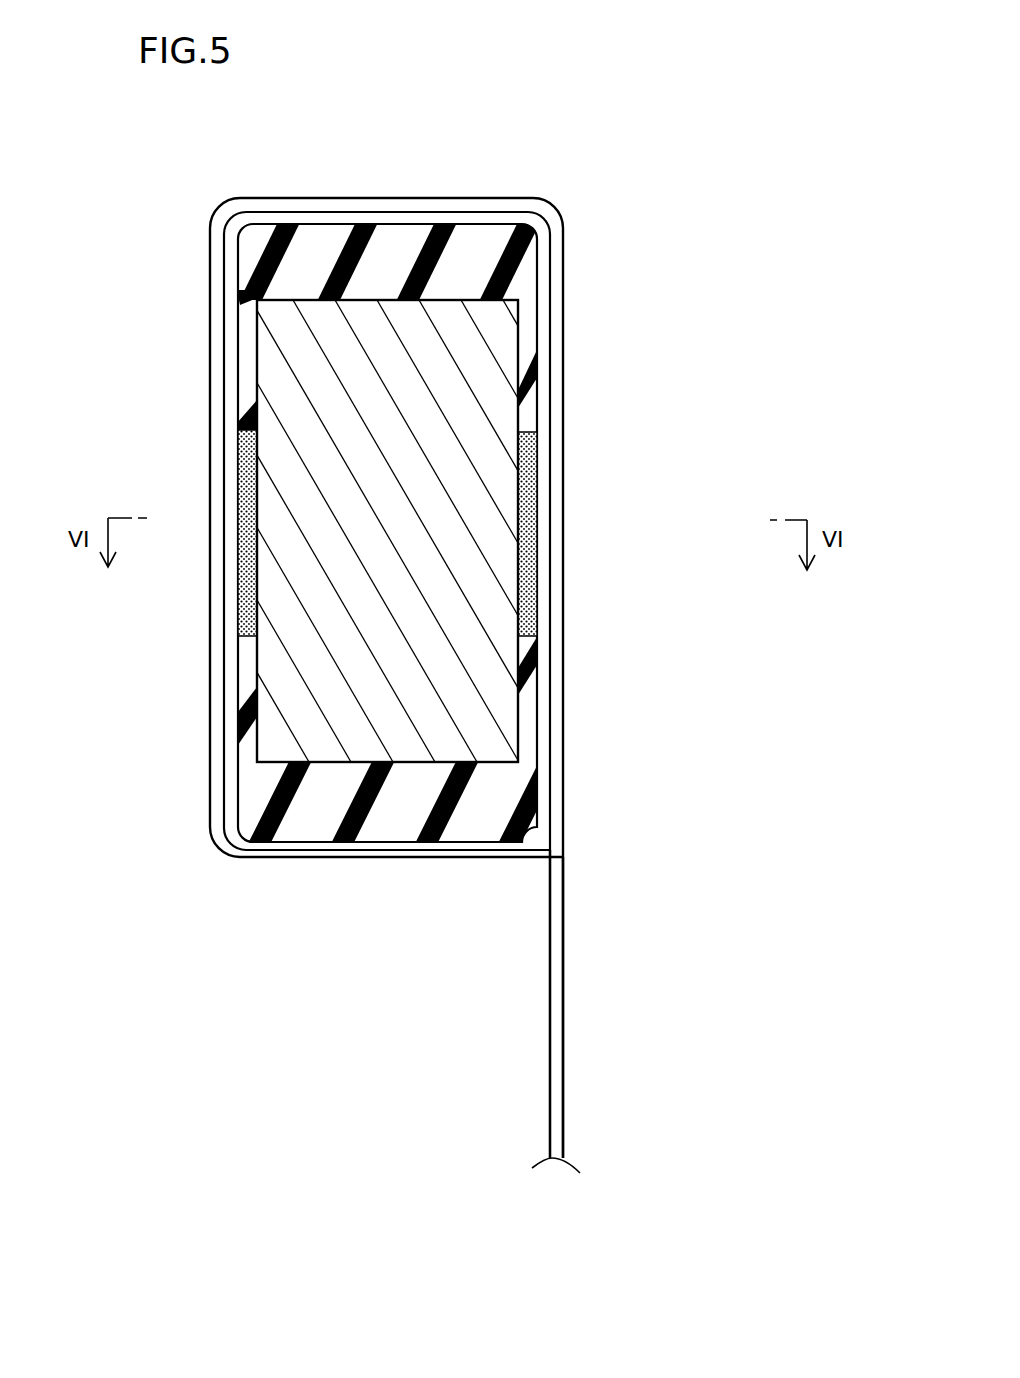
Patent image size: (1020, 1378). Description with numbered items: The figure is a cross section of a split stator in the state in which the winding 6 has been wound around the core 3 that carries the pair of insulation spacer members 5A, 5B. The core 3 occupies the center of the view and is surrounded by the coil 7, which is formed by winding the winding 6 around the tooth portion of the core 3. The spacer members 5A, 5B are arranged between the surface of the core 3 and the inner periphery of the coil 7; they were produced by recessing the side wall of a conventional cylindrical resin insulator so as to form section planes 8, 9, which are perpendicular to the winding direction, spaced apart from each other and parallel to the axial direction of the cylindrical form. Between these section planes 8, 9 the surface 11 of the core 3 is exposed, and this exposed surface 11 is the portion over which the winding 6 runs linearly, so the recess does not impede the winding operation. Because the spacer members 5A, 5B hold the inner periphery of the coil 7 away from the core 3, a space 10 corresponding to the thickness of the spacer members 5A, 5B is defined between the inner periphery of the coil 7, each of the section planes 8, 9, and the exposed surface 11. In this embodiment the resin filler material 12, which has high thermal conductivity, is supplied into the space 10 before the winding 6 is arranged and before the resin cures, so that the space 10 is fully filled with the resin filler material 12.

The core 3 is at (315, 358).
The insulation spacer member 5A is at (398, 240).
The insulation spacer member 5B is at (380, 813).
The winding 6 is at (561, 1027).
The coil 7 is at (565, 328).
The section plane 8 is at (533, 627).
The section plane 9 is at (535, 435).
The space 10 is at (563, 565).
The surface of core 11 is at (523, 526).
The resin filler material 12 is at (536, 497).